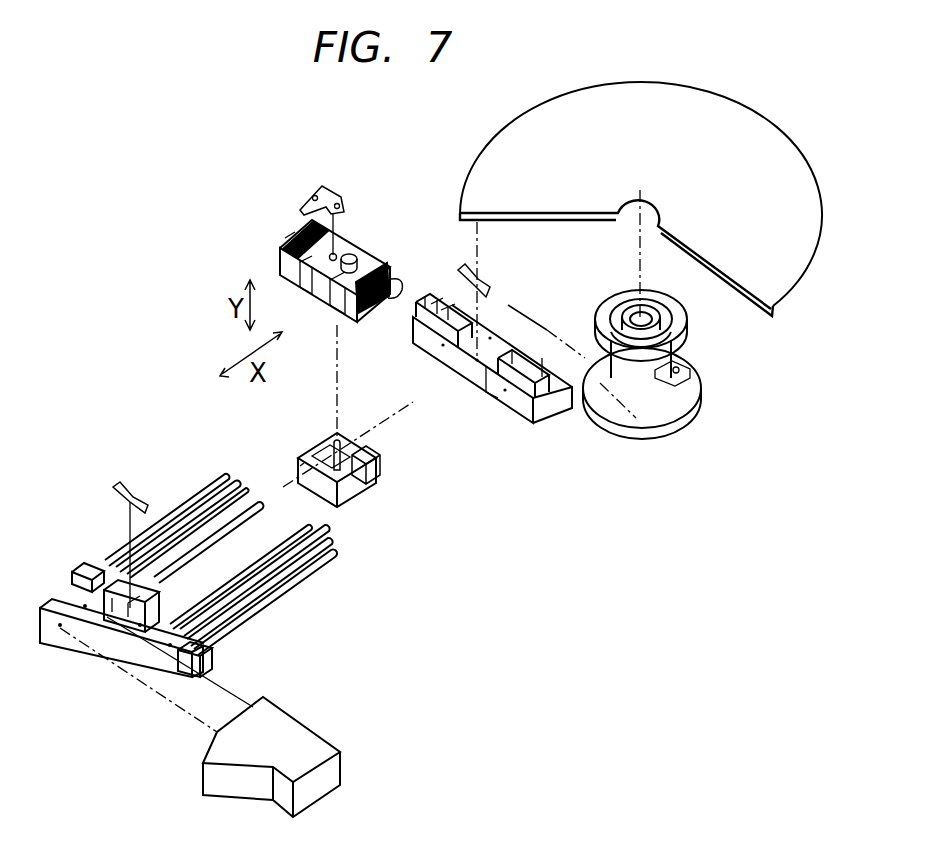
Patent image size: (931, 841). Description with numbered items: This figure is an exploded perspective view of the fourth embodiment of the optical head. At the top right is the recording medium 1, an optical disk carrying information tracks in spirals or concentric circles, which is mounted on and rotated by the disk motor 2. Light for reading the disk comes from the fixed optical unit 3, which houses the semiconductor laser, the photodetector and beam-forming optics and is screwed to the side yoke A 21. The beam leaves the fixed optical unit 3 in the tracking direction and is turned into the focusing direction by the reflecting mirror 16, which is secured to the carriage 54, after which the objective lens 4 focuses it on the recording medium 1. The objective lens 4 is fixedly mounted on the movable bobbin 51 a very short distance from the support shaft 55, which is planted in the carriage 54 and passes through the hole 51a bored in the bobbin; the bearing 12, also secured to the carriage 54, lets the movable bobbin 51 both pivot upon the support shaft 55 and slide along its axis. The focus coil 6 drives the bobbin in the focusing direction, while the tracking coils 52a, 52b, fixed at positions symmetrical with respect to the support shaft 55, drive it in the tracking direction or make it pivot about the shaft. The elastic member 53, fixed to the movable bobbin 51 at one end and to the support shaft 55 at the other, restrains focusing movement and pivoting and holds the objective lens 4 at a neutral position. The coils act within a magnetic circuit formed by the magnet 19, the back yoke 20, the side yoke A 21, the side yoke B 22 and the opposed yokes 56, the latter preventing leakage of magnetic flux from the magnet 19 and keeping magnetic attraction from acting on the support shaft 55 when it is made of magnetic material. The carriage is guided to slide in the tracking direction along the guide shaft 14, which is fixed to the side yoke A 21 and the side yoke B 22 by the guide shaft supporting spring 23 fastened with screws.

The recording medium 1 is at (790, 278).
The disk motor 2 is at (688, 352).
The fixed optical unit 3 is at (320, 787).
The objective lens 4 is at (352, 260).
The focus coil 6 is at (287, 237).
The bearing 12 is at (302, 472).
The guide shaft 14 is at (300, 555).
The reflecting mirror 16 is at (372, 478).
The magnet 19 is at (210, 500).
The back yoke 20 is at (177, 503).
The side yoke A 21 is at (203, 662).
The side yoke B 22 is at (545, 410).
The guide shaft supporting spring 23 is at (480, 282).
The movable bobbin 51 is at (318, 295).
The hole 51a is at (340, 253).
The tracking coil 52a is at (300, 237).
The tracking coil 52b is at (373, 267).
The elastic member 53 is at (337, 200).
The carriage 54 is at (366, 490).
The support shaft 55 is at (353, 448).
The opposed yokes 56 is at (228, 495).